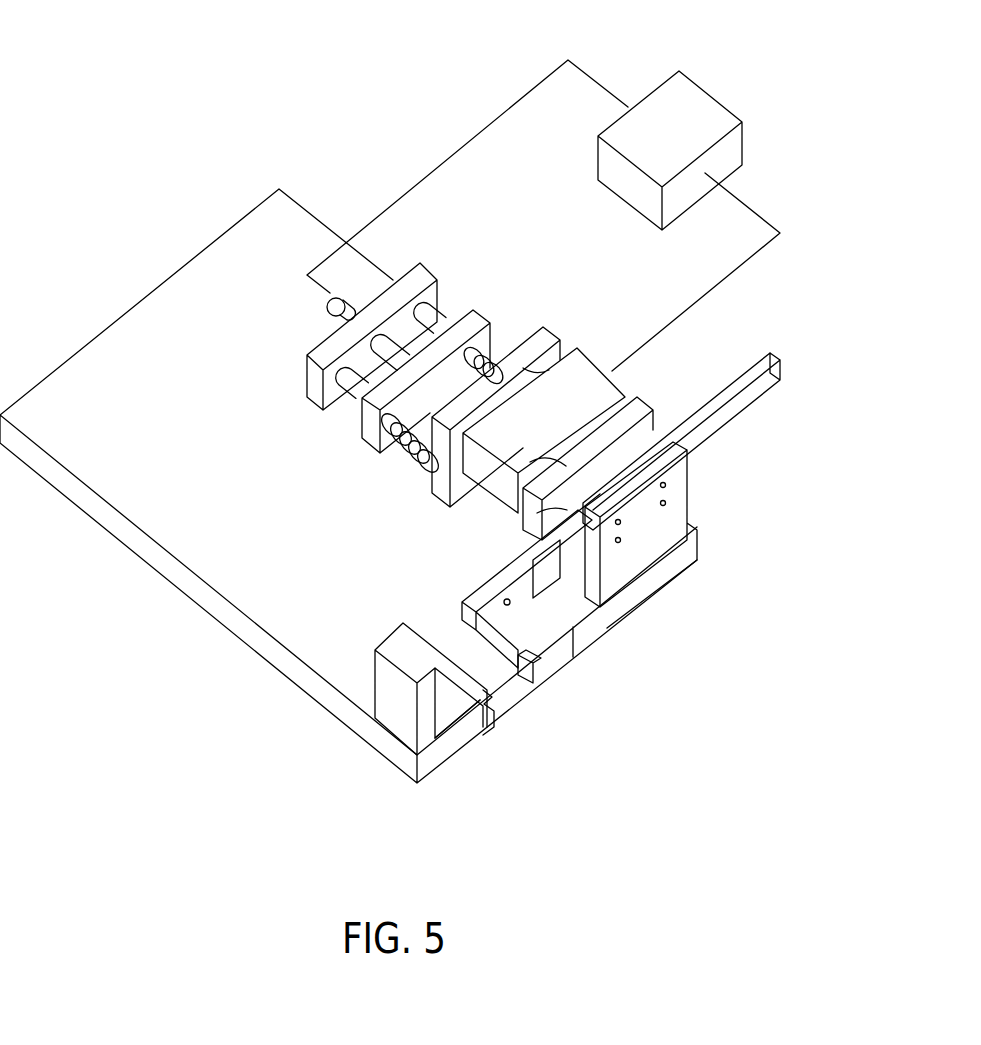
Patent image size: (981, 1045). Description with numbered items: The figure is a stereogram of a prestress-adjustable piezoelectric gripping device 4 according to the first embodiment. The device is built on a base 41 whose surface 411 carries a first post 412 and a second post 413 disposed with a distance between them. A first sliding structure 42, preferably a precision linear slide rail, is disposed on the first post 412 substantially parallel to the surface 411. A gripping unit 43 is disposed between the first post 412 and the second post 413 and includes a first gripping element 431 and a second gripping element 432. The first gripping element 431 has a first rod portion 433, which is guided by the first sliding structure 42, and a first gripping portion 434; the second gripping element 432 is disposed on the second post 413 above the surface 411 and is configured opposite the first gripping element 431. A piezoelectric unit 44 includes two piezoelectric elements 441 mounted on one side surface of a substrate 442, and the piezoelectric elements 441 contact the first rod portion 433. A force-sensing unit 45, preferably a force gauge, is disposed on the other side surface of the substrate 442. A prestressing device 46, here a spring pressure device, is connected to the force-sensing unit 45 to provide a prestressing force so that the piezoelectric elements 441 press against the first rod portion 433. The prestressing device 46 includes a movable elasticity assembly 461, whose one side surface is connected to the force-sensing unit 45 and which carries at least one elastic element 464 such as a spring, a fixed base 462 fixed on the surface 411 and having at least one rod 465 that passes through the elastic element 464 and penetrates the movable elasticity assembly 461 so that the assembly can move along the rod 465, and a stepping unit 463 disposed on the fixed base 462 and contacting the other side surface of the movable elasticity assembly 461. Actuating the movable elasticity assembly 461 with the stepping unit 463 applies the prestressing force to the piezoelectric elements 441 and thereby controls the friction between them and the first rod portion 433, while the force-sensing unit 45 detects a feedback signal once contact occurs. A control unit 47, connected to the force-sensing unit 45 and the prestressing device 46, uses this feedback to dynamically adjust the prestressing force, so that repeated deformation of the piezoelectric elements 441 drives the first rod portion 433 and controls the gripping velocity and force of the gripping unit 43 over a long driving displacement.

The prestress-adjustable piezoelectric gripping device 4 is at (120, 85).
The base 41 is at (272, 683).
The surface 411 is at (193, 550).
The first post 412 is at (638, 548).
The second post 413 is at (400, 722).
The first sliding structure 42 is at (562, 545).
The gripping unit 43 is at (586, 812).
The first gripping element 431 is at (540, 677).
The second gripping element 432 is at (492, 717).
The piezoelectric unit 44 is at (658, 392).
The first rod portion 433 is at (717, 420).
The first gripping portion 434 is at (488, 632).
The piezoelectric element 441 is at (537, 507).
The substrate 442 is at (478, 506).
The force-sensing unit 45 is at (592, 365).
The prestressing device 46 is at (485, 298).
The movable elasticity assembly 461 is at (395, 487).
The fixed base 462 is at (310, 378).
The stepping unit 463 is at (332, 305).
The elastic element 464 is at (370, 447).
The rod 465 is at (440, 318).
The control unit 47 is at (690, 104).